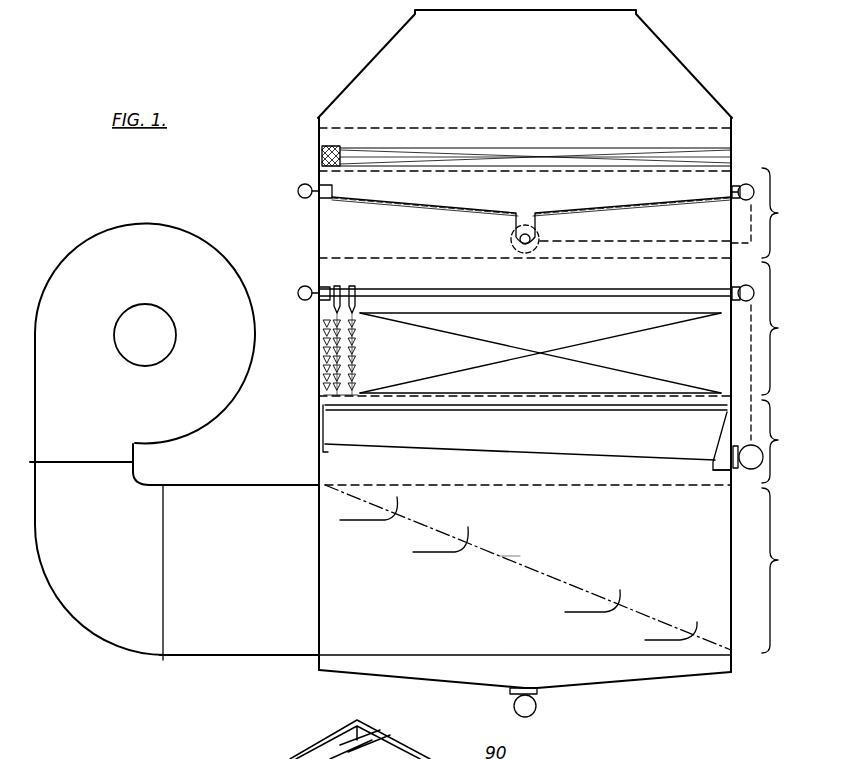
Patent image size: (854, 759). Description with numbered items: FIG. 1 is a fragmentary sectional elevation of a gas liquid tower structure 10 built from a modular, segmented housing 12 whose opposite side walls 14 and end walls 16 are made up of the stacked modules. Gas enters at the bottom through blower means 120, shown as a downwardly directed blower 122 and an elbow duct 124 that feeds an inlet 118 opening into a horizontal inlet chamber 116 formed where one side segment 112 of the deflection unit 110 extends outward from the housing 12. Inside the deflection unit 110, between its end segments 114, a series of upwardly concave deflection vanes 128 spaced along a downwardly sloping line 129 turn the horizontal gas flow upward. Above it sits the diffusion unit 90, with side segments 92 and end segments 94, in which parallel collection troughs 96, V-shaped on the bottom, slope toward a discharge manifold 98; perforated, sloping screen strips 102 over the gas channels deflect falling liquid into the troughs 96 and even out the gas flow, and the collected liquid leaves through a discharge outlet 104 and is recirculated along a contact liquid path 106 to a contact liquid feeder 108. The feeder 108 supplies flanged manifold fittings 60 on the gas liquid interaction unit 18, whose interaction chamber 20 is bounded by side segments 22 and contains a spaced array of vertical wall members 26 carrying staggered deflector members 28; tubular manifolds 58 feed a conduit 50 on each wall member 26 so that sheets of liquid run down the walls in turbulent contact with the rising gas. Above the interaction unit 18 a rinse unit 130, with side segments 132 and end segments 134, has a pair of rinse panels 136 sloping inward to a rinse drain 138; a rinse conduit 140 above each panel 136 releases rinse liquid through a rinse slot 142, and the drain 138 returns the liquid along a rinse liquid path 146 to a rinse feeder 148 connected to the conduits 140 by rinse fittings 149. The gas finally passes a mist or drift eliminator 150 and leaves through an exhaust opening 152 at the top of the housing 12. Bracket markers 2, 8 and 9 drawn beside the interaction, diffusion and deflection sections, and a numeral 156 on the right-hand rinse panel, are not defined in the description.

The spray section 2 is at (552, 329).
The tray section 8 is at (773, 441).
The sump section 9 is at (773, 570).
The tower structure 10 is at (300, 165).
The housing 12 is at (319, 216).
The side walls 14 is at (319, 248).
The end walls 16 is at (525, 243).
The gas liquid interaction unit 18 is at (316, 391).
The interaction chamber 20 is at (540, 353).
The side segments 22 is at (319, 262).
The wall members 26 is at (322, 318).
The deflector members 28 is at (358, 380).
The conduit 50 is at (342, 288).
The tubular manifolds 58 is at (440, 290).
The flanged manifold fittings 60 is at (300, 292).
The diffusion unit 90 is at (318, 427).
The side segments 92 is at (318, 445).
The end segments 94 is at (528, 467).
The collection troughs 96 is at (522, 452).
The discharge manifold 98 is at (713, 468).
The screen strip 102 is at (705, 412).
The discharge outlet 104 is at (746, 470).
The contact liquid path 106 is at (754, 362).
The contact liquid feeder 108 is at (319, 300).
The deflection unit 110 is at (735, 642).
The side segments 112 is at (731, 596).
The end segments 114 is at (445, 659).
The horizontal inlet chamber 116 is at (198, 485).
The inlet 118 is at (163, 540).
The blower means 120 is at (155, 224).
The blower 122 is at (145, 312).
The elbow duct 124 is at (140, 655).
The deflection vanes 128 is at (424, 552).
The sloping line 129 is at (516, 556).
The rinse unit 130 is at (319, 200).
The side segments 132 is at (319, 232).
The end segments 134 is at (378, 237).
The rinse panels 136 is at (495, 212).
The rinse drain 138 is at (512, 234).
The rinse conduit 140 is at (336, 193).
The rinse slot 142 is at (336, 200).
The rinse liquid path 146 is at (630, 242).
The rinse feeder 148 is at (298, 190).
The rinse fittings 149 is at (321, 160).
The mist or drift eliminator 150 is at (372, 130).
The exhaust opening 152 is at (412, 20).
The tray plate 156 is at (585, 208).